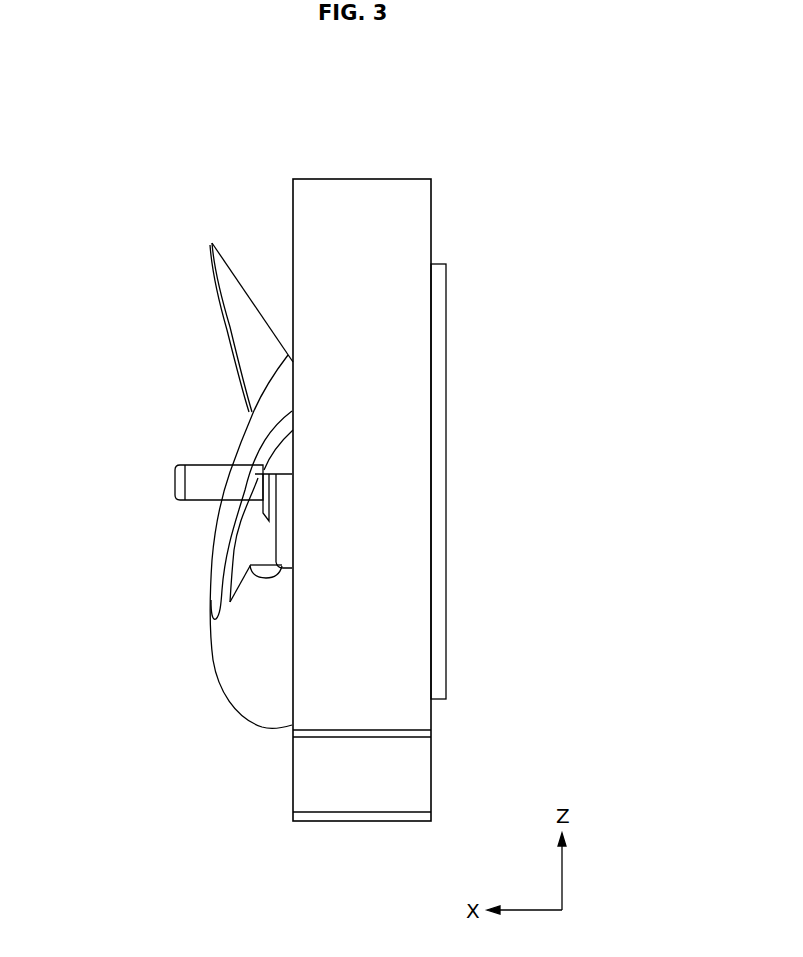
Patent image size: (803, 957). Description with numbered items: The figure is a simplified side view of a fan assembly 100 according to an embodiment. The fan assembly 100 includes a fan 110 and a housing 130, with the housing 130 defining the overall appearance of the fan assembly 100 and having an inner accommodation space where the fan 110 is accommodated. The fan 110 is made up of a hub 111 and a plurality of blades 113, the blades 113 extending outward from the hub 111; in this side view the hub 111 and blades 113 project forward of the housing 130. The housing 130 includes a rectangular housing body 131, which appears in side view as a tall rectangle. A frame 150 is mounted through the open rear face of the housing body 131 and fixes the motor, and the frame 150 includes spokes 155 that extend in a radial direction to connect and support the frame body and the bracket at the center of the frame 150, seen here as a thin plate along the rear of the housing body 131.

The fan assembly 100 is at (210, 76).
The fan 110 is at (115, 543).
The hub 111 is at (285, 537).
The blades 113 is at (238, 636).
The housing 130 is at (362, 456).
The housing body 131 is at (360, 198).
The frame 150 is at (533, 481).
The spokes 155 is at (446, 319).